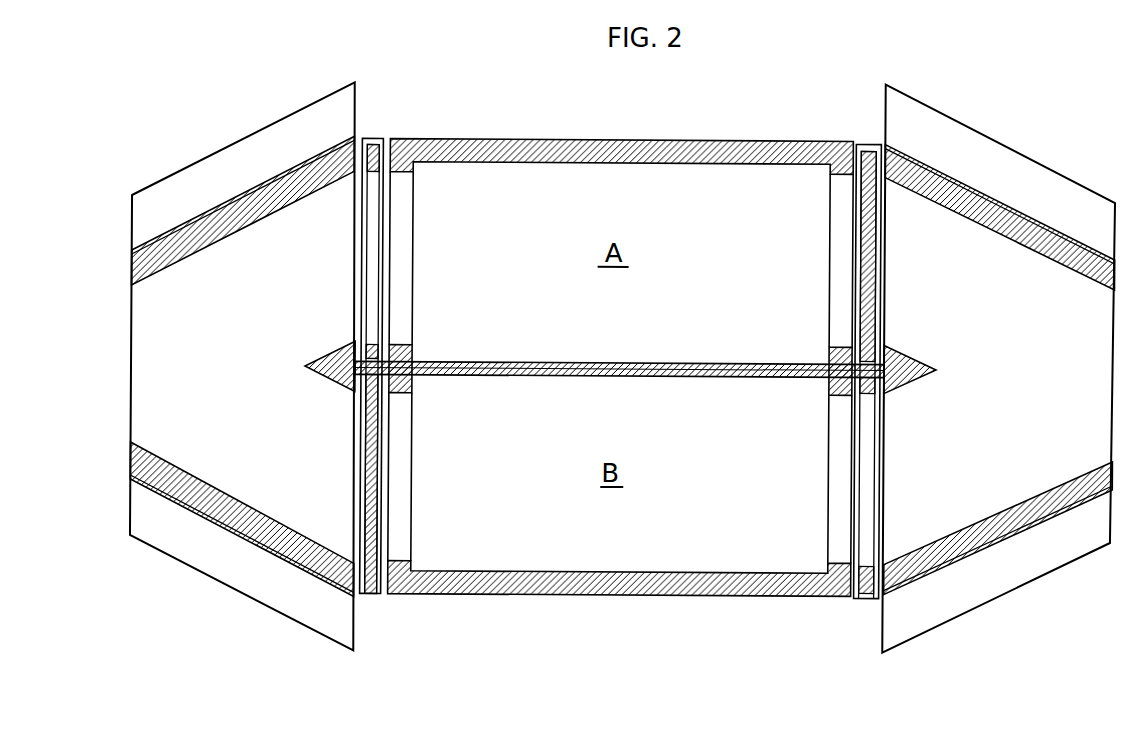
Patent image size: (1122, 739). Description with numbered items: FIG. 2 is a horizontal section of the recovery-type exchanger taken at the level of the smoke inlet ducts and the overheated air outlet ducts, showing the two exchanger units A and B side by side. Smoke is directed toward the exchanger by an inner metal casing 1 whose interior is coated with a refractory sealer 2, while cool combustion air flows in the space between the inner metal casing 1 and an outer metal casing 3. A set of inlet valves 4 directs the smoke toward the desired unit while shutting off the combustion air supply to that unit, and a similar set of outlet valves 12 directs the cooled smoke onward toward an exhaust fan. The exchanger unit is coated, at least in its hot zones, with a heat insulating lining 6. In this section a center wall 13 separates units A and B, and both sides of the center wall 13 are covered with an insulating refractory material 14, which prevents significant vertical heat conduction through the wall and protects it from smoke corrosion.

The inner metal casing 1 is at (157, 494).
The refractory sealer 2 is at (145, 465).
The outer metal casing 3 is at (213, 578).
The inlet valves 4 is at (374, 598).
The heat insulating lining 6 is at (632, 150).
The outlet valves 12 is at (862, 143).
The center wall 13 is at (582, 364).
The insulating refractory material 14 is at (694, 366).